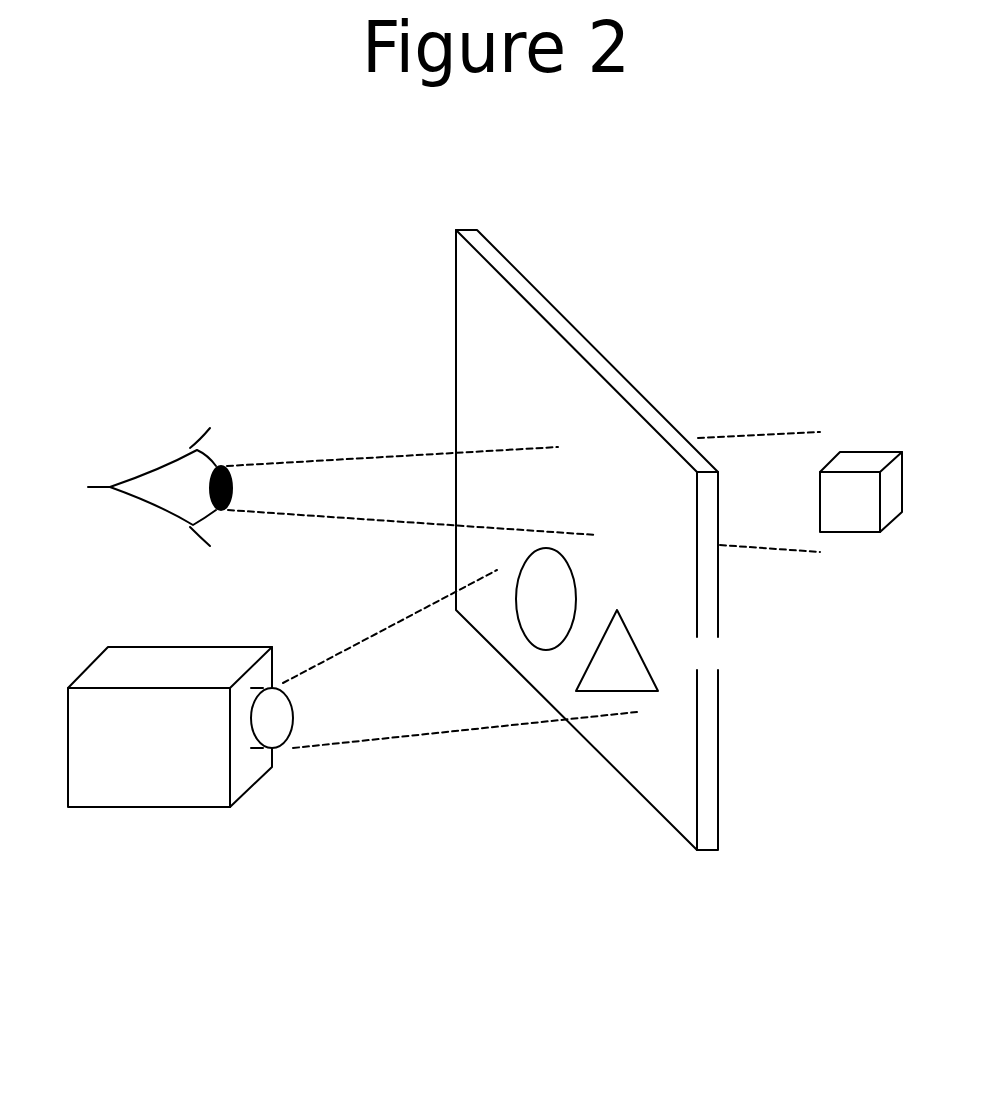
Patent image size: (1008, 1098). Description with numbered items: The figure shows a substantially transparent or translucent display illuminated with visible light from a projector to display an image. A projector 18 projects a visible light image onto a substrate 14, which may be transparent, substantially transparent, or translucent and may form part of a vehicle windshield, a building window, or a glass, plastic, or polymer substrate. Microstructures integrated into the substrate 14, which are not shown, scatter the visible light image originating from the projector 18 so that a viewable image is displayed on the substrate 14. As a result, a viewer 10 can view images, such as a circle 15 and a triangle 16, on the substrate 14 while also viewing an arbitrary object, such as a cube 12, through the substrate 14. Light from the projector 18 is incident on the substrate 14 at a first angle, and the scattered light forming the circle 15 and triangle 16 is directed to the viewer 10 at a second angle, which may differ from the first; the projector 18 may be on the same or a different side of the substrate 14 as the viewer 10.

The viewer 10 is at (213, 445).
The cube 12 is at (860, 452).
The substrate 14 is at (537, 290).
The circle 15 is at (537, 610).
The triangle 16 is at (616, 670).
The projector 18 is at (190, 767).